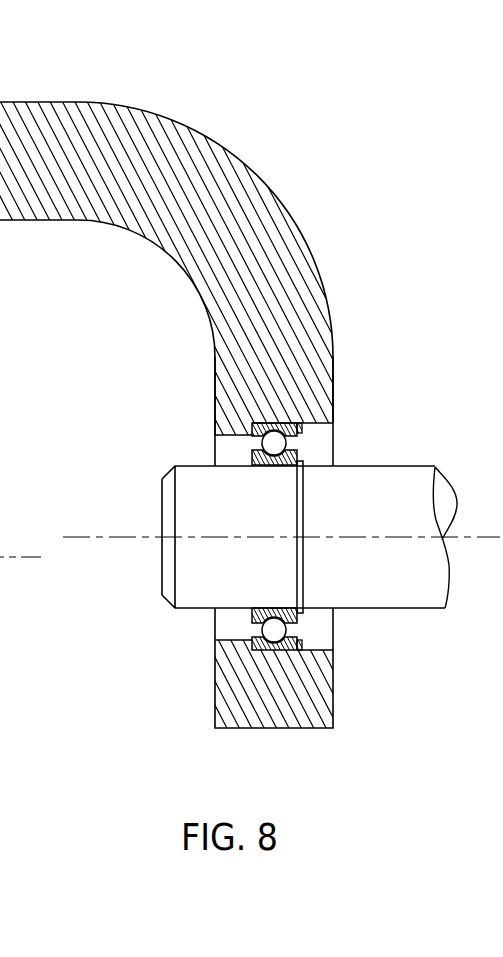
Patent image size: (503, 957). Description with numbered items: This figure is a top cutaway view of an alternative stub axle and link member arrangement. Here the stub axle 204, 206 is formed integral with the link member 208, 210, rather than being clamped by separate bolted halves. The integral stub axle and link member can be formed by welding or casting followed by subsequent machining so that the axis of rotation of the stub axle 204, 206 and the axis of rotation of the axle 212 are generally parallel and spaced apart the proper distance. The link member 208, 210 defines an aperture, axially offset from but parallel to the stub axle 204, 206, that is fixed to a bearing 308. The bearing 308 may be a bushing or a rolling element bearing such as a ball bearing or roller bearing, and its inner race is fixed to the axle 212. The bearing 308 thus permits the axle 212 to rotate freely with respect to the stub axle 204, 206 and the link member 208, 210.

The stub axle 204 is at (251, 390).
The stub axle 206 is at (35, 122).
The link member 208 is at (343, 365).
The link member 210 is at (297, 347).
The axle 212 is at (380, 482).
The bearing 308 is at (246, 612).